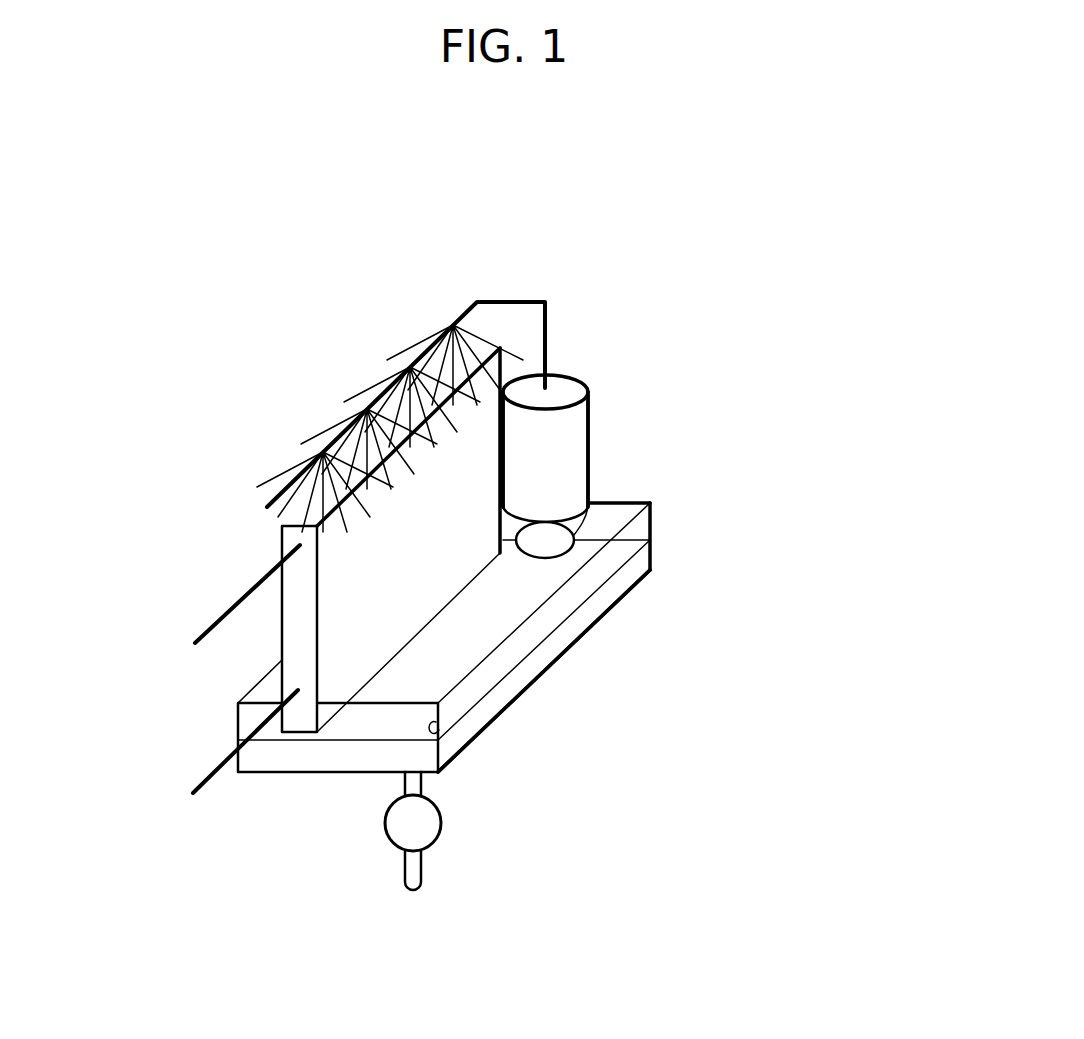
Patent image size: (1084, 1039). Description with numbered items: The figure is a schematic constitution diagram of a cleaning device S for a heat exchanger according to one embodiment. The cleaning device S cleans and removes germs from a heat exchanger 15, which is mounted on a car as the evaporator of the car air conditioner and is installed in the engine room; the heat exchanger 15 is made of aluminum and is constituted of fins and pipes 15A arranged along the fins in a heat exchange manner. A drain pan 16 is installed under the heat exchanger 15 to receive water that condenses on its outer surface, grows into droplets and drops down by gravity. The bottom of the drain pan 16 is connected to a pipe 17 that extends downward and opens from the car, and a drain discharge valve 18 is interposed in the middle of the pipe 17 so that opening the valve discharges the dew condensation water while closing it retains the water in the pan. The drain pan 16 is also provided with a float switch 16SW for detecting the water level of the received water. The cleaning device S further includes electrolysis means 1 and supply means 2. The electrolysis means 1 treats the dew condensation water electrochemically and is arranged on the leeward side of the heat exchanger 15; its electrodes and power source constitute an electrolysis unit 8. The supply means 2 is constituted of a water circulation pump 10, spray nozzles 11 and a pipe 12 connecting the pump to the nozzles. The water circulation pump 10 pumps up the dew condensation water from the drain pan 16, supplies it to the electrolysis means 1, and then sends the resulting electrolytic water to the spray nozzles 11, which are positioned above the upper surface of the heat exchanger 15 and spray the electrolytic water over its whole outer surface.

The electrolysis means 1 is at (606, 379).
The supply means 2 is at (612, 522).
The electrolysis unit 8 is at (560, 378).
The water circulation pump 10 is at (592, 508).
The spray nozzles 11 is at (453, 325).
The pipe 12 is at (503, 301).
The heat exchanger 15 is at (252, 653).
The pipes 15A is at (213, 623).
The drain pan 16 is at (536, 661).
The float switch 16SW is at (437, 728).
The pipe 17 is at (424, 869).
The drain discharge valve 18 is at (387, 833).
The cleaning device S is at (571, 285).